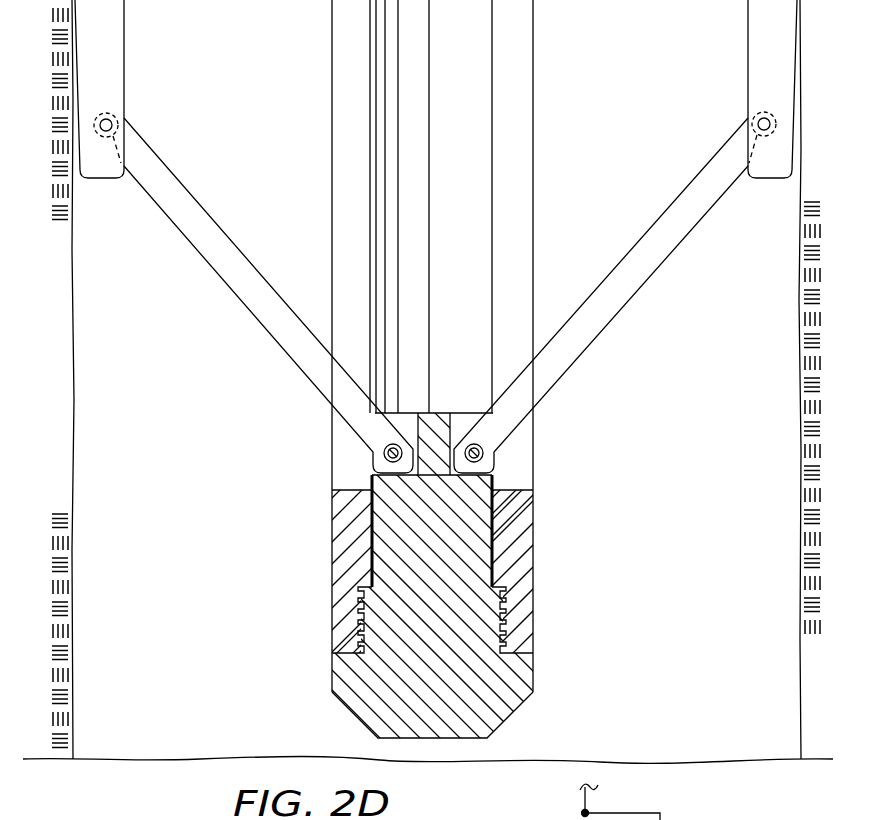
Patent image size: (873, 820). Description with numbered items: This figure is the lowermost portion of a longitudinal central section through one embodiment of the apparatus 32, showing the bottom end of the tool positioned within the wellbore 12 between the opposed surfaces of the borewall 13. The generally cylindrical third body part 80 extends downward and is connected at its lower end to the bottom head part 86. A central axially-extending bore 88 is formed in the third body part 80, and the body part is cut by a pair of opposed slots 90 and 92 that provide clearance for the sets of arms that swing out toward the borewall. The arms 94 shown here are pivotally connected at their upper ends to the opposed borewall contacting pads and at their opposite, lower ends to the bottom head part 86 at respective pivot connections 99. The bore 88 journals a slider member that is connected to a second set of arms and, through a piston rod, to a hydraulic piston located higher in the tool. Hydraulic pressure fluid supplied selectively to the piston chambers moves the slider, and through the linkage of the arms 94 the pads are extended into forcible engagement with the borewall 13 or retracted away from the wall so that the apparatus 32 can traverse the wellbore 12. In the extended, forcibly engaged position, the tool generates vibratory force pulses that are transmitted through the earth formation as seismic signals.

The wellbore 12 is at (88, 539).
The borewall 13 is at (73, 452).
The apparatus 32 is at (542, 101).
The third body part 80 is at (535, 510).
The bottom head part 86 is at (518, 704).
The central axially-extending bore 88 is at (493, 178).
The slot 90 is at (352, 490).
The slot 92 is at (520, 490).
The arms 94 is at (248, 307).
The pivot connections 99 is at (474, 444).